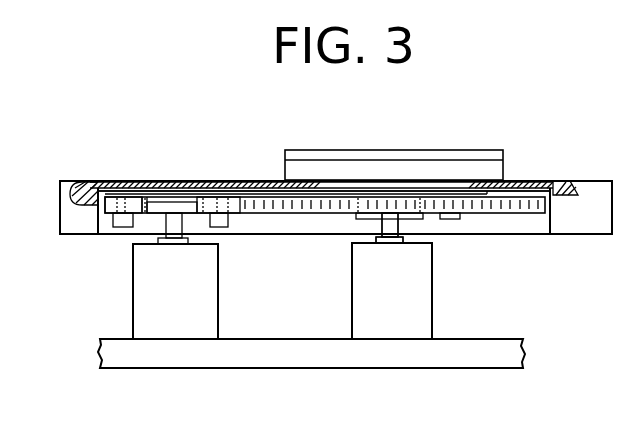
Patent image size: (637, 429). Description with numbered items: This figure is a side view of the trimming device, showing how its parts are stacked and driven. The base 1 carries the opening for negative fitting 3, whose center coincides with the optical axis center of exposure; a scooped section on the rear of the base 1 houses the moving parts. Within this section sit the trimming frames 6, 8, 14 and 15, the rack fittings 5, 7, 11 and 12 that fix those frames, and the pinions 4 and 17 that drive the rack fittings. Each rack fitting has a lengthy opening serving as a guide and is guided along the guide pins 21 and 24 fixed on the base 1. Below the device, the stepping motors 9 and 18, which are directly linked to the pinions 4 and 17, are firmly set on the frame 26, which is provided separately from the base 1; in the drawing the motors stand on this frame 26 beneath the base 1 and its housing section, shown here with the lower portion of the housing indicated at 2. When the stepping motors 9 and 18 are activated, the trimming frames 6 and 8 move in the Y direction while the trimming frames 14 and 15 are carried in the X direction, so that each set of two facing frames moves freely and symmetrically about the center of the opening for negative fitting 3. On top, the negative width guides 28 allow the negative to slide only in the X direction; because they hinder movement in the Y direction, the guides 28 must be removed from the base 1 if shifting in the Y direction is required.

The base 1 is at (575, 181).
The frame bottom plate 2 is at (538, 226).
The opening for negative fitting 3 is at (442, 197).
The pinion 4 is at (160, 201).
The rack fitting 5 is at (108, 186).
The trimming frame 6 is at (130, 196).
The rack fitting 7 is at (205, 197).
The trimming frame 8 is at (226, 190).
The stepping motor 9 is at (133, 291).
The rack fitting 11 is at (300, 214).
The rack fitting 12 is at (389, 228).
The trimming frame 14 is at (258, 182).
The trimming frame 15 is at (528, 181).
The pinion 17 is at (390, 197).
The stepping motor 18 is at (432, 312).
The guide pin 21 is at (120, 230).
The guide pin 24 is at (448, 221).
The frame 26 is at (410, 362).
The negative width guides 28 is at (328, 150).